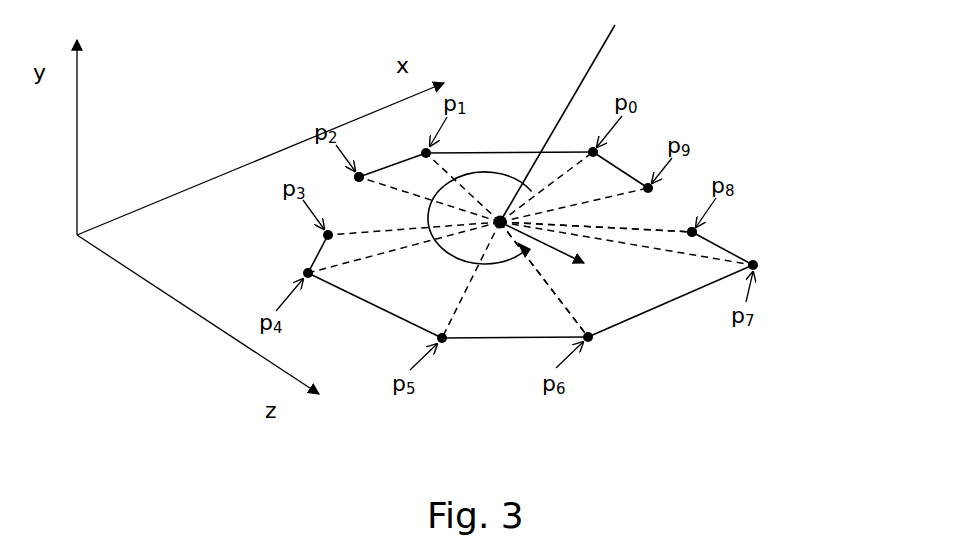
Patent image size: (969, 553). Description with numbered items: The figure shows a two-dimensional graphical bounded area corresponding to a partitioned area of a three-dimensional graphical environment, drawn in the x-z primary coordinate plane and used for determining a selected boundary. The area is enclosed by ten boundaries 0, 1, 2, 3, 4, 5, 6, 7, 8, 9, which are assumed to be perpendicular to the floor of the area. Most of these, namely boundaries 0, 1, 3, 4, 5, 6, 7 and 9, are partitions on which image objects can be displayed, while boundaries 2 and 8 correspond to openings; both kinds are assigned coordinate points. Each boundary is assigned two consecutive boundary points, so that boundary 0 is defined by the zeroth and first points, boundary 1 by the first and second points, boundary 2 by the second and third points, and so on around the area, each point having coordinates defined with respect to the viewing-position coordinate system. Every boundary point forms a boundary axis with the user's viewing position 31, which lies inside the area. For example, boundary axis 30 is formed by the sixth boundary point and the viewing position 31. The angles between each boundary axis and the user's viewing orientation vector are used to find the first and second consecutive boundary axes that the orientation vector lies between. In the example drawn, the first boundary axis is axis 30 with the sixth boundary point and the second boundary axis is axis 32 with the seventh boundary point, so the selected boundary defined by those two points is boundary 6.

The boundary 0 is at (509, 138).
The boundary 1 is at (392, 157).
The boundary 2 is at (345, 190).
The boundary 3 is at (313, 254).
The boundary 4 is at (375, 305).
The boundary 5 is at (515, 352).
The boundary 6 is at (670, 301).
The boundary 7 is at (722, 245).
The boundary 8 is at (684, 212).
The boundary 9 is at (620, 164).
The boundary axis 30 is at (558, 291).
The viewing position 31 is at (572, 112).
The boundary axis 32 is at (666, 246).